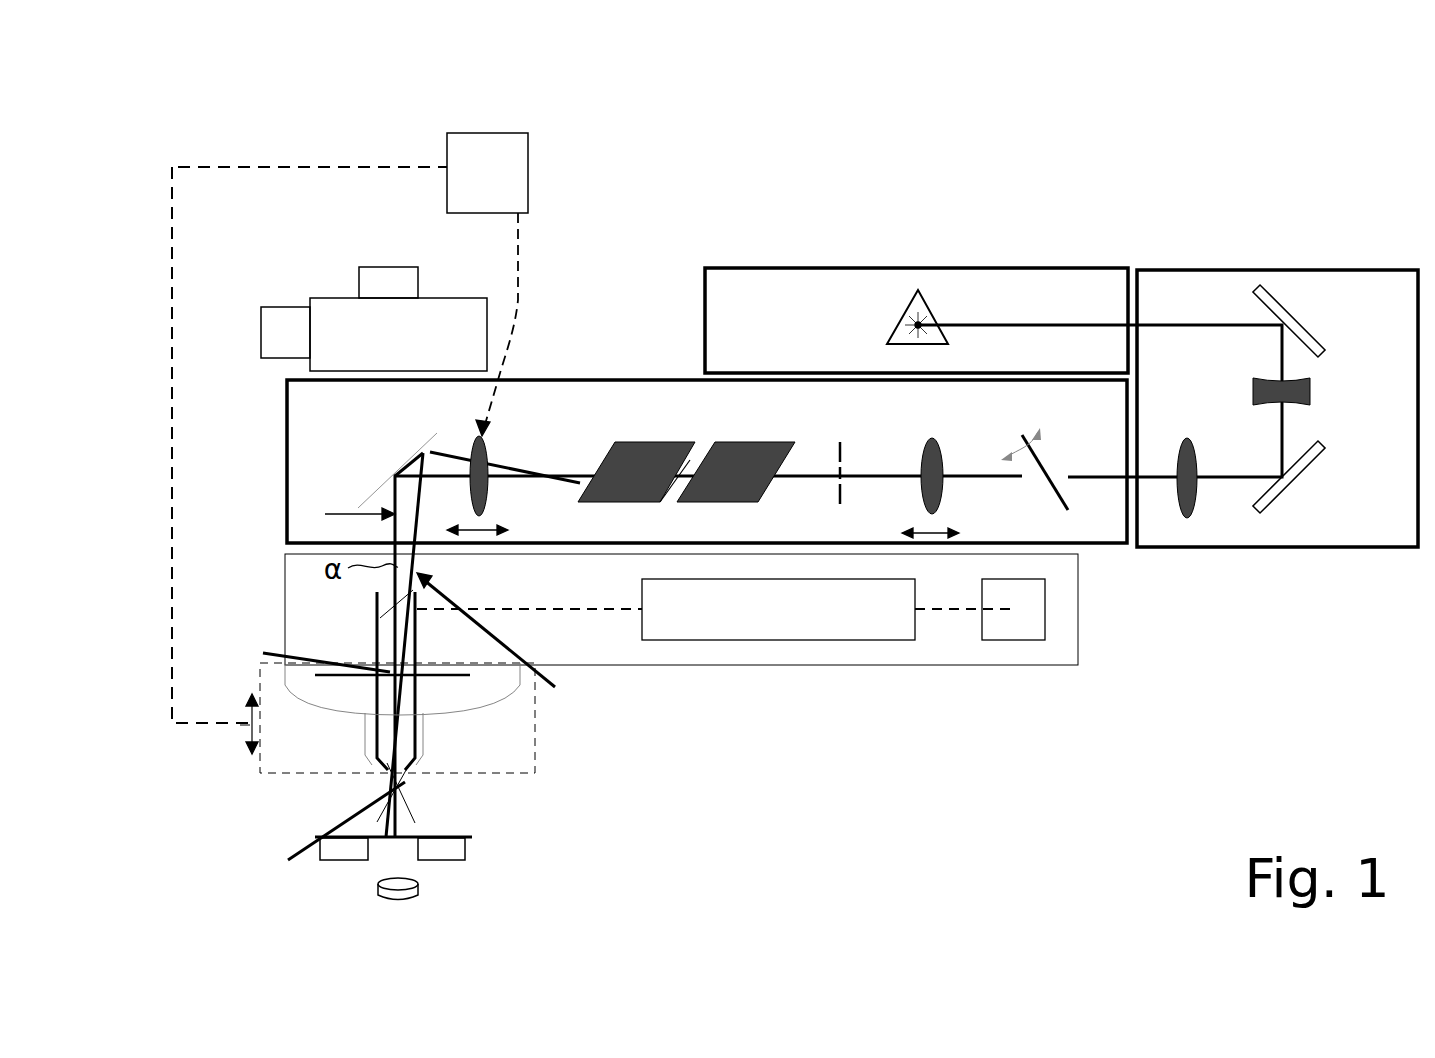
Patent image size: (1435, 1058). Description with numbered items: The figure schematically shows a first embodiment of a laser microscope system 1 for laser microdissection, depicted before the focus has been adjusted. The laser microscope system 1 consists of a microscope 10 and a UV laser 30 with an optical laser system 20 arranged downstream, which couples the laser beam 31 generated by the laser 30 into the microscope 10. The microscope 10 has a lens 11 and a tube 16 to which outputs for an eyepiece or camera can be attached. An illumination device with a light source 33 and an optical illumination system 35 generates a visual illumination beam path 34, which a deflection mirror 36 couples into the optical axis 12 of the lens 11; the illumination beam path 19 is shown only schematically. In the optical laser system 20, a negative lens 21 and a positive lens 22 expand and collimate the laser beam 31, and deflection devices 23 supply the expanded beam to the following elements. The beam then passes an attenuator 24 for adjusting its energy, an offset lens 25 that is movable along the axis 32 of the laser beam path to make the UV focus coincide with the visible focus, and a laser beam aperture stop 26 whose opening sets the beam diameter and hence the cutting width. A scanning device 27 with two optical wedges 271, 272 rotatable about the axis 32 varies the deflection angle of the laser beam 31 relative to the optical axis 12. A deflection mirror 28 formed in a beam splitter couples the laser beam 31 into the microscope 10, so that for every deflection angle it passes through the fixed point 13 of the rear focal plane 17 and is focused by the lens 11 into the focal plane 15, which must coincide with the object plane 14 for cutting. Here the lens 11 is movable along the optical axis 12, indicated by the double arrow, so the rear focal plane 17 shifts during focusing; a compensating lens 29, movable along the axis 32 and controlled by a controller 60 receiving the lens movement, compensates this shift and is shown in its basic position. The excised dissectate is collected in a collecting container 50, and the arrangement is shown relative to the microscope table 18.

The laser microscope system 1 is at (215, 140).
The microscope 10 is at (222, 580).
The lens 11 is at (260, 758).
The optical axis 12 is at (341, 515).
The fixed point 13 is at (305, 652).
The object plane 14 is at (472, 840).
The focal plane 15 is at (333, 825).
The tube 16 is at (428, 308).
The rear focal plane 17 is at (467, 677).
The microscope table 18 is at (440, 862).
The illumination beam path 19 is at (377, 650).
The optical laser system 20 is at (1190, 633).
The negative lens 21 is at (1312, 388).
The positive lens 22 is at (1190, 440).
The deflection devices 23 is at (1297, 320).
The attenuator 24 is at (1048, 458).
The offset lens 25 is at (945, 455).
The laser beam aperture stop 26 is at (845, 450).
The scanning device 27 is at (683, 445).
The optical wedge 271 is at (660, 442).
The optical wedge 272 is at (750, 442).
The deflection mirror 28 is at (407, 458).
The compensating lens 29 is at (487, 503).
The UV laser 30 is at (845, 268).
The laser beam 31 is at (1030, 325).
The axis of the laser beam path 32 is at (460, 470).
The light source 33 is at (1030, 640).
The illumination beam path 34 is at (613, 612).
The optical illumination system 35 is at (860, 640).
The deflection mirror 36 is at (377, 607).
The collecting container 50 is at (418, 890).
The controller 60 is at (528, 155).